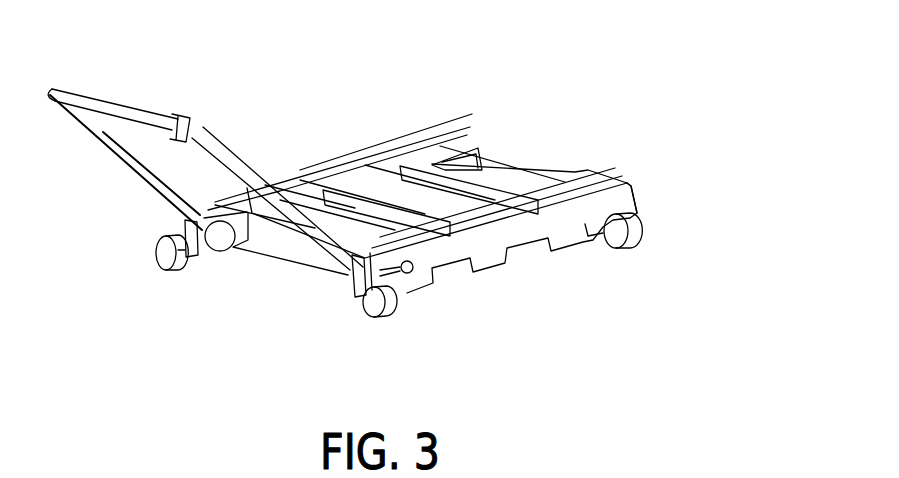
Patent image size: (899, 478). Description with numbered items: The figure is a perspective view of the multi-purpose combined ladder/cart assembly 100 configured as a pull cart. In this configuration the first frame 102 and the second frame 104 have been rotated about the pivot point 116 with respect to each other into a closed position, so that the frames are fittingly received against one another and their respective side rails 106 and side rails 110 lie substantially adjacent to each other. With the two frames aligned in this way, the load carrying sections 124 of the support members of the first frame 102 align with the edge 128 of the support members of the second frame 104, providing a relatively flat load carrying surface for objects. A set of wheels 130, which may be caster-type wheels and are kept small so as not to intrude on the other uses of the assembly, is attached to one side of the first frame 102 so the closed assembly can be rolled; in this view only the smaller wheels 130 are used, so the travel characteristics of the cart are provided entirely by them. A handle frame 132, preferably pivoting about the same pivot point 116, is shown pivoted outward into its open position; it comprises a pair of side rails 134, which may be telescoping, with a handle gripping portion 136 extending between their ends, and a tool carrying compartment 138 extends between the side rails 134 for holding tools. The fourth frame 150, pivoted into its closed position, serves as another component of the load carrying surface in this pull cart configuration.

The multi-purpose combined ladder/cart assembly 100 is at (595, 56).
The first frame 102 is at (530, 240).
The second frame 104 is at (610, 170).
The side rails 106 is at (623, 197).
The side rails 110 is at (293, 180).
The pivot point 116 is at (226, 243).
The load carrying sections 124 is at (357, 162).
The edge 128 is at (402, 157).
The wheels 130 is at (388, 311).
The handle frame 132 is at (130, 168).
The side rails 134 is at (210, 135).
The handle gripping portion 136 is at (100, 85).
The tool carrying compartment 138 is at (177, 112).
The fourth frame 150 is at (466, 140).